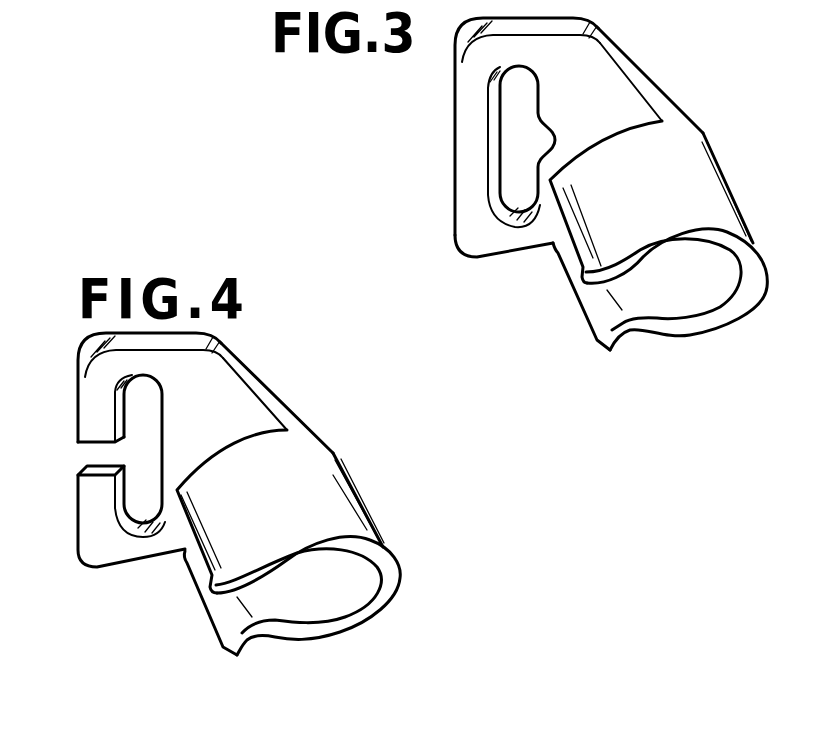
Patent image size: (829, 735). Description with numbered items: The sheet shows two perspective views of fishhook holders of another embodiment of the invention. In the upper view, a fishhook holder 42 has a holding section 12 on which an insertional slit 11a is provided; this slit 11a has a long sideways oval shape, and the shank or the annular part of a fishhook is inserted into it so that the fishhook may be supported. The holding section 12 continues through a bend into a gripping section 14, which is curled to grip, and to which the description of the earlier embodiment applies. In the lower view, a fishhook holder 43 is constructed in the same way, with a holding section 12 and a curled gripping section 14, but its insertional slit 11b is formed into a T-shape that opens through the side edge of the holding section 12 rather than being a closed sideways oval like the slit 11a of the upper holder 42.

In FIG. 3, the insertional slit 11a is at (507, 123).
In FIG. 4, the T-shaped insertional slit 11b is at (135, 405).
In FIG. 3, the holding section 12 is at (603, 93).
In FIG. 4, the holding section 12 is at (227, 393).
In FIG. 3, the gripping section 14 is at (697, 180).
In FIG. 4, the gripping section 14 is at (330, 490).
In FIG. 3, the fishhook holder 42 is at (700, 122).
In FIG. 4, the fishhook holder 43 is at (327, 434).